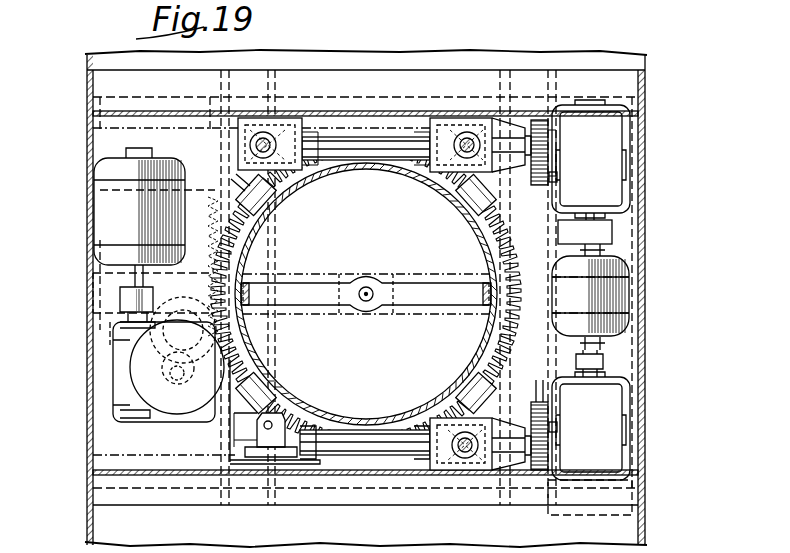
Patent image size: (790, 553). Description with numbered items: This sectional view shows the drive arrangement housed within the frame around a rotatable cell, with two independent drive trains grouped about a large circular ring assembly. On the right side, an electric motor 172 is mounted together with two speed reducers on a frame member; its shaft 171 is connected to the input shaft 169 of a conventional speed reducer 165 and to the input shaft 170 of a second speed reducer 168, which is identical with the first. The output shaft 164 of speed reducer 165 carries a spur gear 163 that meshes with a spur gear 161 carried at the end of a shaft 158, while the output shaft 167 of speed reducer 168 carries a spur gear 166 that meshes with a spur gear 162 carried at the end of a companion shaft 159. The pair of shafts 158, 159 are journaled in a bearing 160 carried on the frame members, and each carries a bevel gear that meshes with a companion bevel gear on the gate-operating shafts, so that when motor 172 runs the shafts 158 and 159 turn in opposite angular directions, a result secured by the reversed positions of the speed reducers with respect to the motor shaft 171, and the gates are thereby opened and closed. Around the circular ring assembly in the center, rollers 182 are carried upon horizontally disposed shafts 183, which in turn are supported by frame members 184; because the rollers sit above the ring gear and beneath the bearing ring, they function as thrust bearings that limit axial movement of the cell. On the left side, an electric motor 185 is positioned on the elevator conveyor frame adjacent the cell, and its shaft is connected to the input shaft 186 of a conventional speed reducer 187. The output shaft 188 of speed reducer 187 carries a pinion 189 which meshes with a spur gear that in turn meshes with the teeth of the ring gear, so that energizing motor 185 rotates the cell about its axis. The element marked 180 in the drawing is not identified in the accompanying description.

The shaft 158 is at (410, 456).
The shaft 159 is at (327, 140).
The bearing 160 is at (313, 135).
The spur gear 161 is at (540, 473).
The spur gear 162 is at (540, 125).
The spur gear 163 is at (535, 400).
The output shaft 164 is at (558, 426).
The speed reducer 165 is at (600, 459).
The spur gear 166 is at (530, 190).
The output shaft 167 is at (558, 178).
The speed reducer 168 is at (602, 143).
The input shaft 169 is at (605, 362).
The input shaft 170 is at (630, 222).
The motor shaft 171 is at (602, 251).
The electric motor 172 is at (612, 289).
The pinion gear 180 is at (184, 280).
The rollers 182 is at (272, 200).
The shafts 183 is at (236, 184).
The frame members 184 is at (240, 176).
The electric motor 185 is at (96, 189).
The input shaft 186 is at (128, 316).
The speed reducer 187 is at (122, 402).
The output shaft 188 is at (178, 395).
The pinion 189 is at (160, 358).